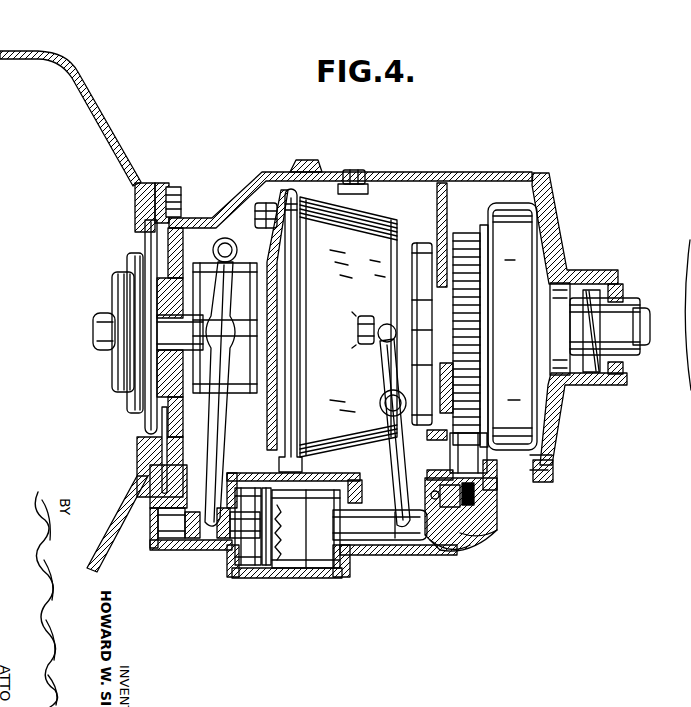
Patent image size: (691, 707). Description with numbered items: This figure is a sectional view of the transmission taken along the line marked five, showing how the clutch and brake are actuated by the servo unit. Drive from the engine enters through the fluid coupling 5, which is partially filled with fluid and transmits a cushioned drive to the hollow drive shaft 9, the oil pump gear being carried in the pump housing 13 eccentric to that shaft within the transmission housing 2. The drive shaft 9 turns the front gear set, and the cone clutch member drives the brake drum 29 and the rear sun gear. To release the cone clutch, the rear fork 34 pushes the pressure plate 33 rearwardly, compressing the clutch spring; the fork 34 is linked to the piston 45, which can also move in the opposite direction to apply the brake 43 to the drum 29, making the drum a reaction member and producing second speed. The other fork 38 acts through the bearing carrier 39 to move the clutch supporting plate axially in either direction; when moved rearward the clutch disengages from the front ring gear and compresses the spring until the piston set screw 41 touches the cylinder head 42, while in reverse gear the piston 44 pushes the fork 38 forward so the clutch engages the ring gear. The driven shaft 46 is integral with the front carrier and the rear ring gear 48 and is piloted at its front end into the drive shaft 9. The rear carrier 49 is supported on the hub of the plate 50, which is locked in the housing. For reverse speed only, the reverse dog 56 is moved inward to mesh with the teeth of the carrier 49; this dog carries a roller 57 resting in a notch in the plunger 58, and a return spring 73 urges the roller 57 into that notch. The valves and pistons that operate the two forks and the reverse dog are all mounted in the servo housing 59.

The transmission housing 2 is at (262, 178).
The fluid coupling 5 is at (325, 140).
The drive shaft 9 is at (103, 350).
The pump housing 13 is at (135, 257).
The brake drum 29 is at (291, 192).
The pressure plate 33 is at (423, 243).
The fork 34 is at (378, 362).
The fork 38 is at (218, 446).
The bearing carrier 39 is at (242, 365).
The piston set screw 41 is at (277, 570).
The cylinder head 42 is at (297, 568).
The brake 43 is at (348, 327).
The piston 44 is at (248, 567).
The piston 45 is at (327, 570).
The driven shaft 46 is at (690, 256).
The rear ring gear 48 is at (523, 392).
The rear carrier 49 is at (488, 222).
The plate 50 is at (468, 235).
The reverse dog 56 is at (533, 465).
The roller 57 is at (498, 510).
The plunger 58 is at (495, 528).
The servo housing 59 is at (470, 536).
The return spring 73 is at (510, 498).